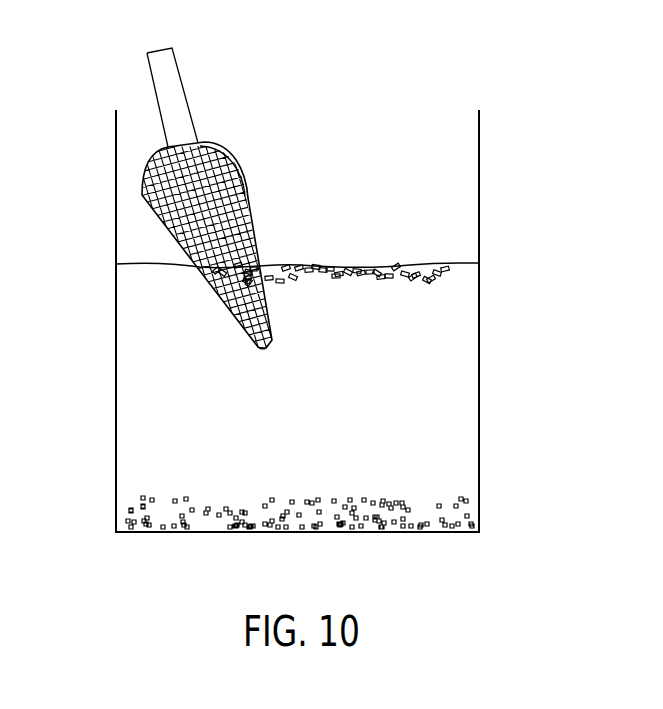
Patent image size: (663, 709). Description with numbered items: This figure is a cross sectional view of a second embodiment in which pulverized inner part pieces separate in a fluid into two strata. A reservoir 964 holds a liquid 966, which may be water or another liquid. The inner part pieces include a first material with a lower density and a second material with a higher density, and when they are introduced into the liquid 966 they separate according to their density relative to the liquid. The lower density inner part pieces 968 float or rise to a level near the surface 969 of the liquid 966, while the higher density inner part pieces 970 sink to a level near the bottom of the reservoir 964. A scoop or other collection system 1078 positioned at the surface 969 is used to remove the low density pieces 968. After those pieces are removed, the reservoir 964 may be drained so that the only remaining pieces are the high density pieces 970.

The reservoir 964 is at (480, 377).
The liquid 966 is at (130, 385).
The lower density inner part pieces 968 is at (318, 272).
The surface 969 is at (447, 263).
The higher density inner part pieces 970 is at (247, 517).
The scoop or other collection system 1078 is at (188, 107).